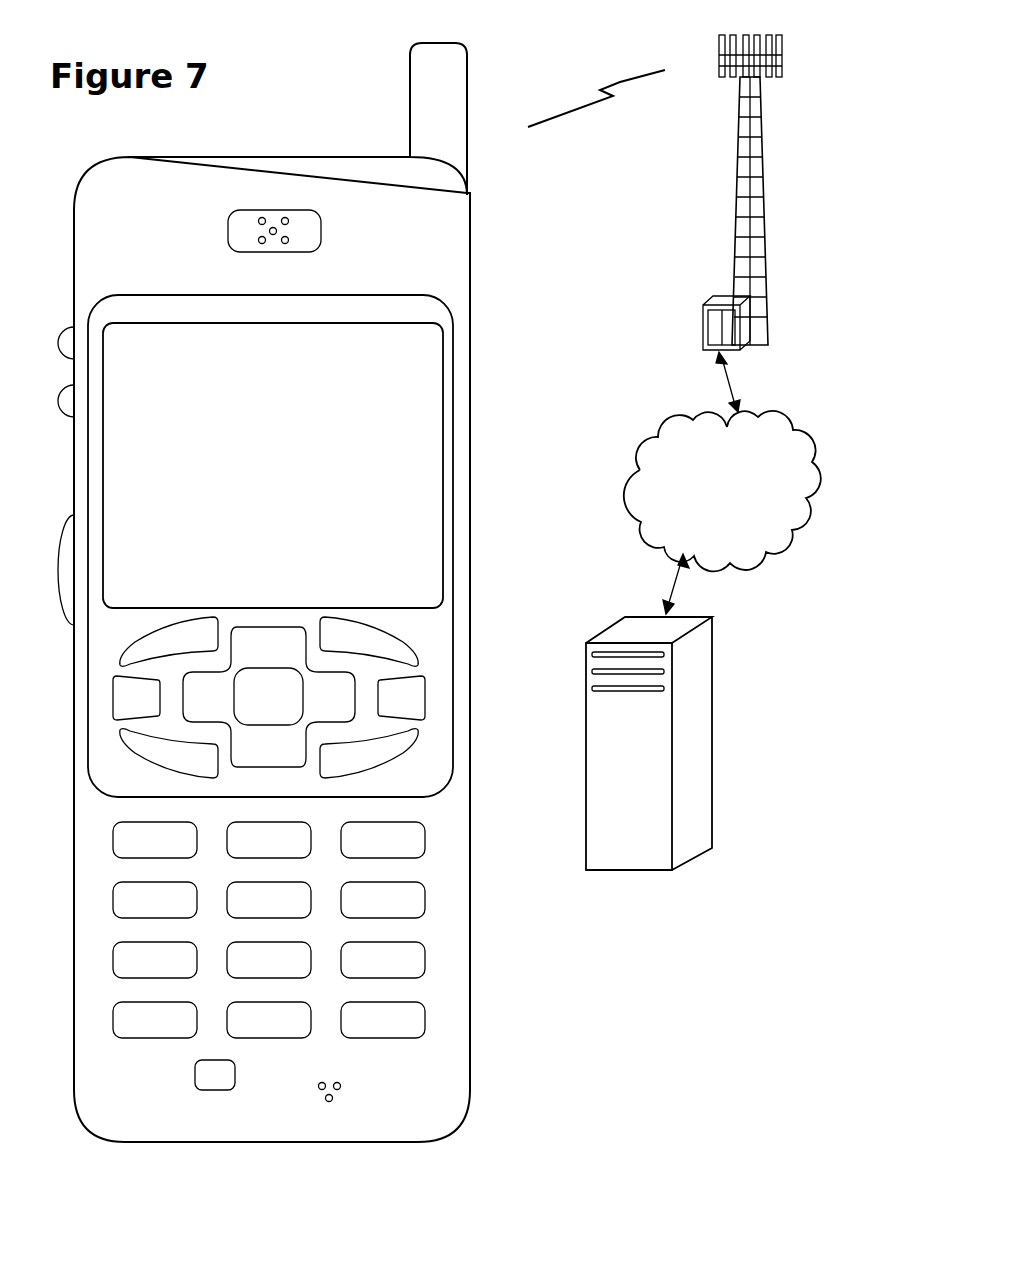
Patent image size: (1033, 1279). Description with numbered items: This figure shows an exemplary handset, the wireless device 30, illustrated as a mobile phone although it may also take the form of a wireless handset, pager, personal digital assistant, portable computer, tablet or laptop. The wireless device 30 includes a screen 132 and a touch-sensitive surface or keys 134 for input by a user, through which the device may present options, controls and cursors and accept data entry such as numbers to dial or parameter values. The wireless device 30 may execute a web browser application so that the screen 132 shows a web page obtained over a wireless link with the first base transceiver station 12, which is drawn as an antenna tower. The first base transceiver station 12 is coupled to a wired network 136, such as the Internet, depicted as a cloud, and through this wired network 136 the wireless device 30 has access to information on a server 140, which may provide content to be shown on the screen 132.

The wireless device 30 is at (120, 1140).
The screen 132 is at (455, 330).
The keys 134 is at (476, 1017).
The first base transceiver station 12 is at (730, 207).
The wired network 136 is at (652, 537).
The server 140 is at (630, 871).